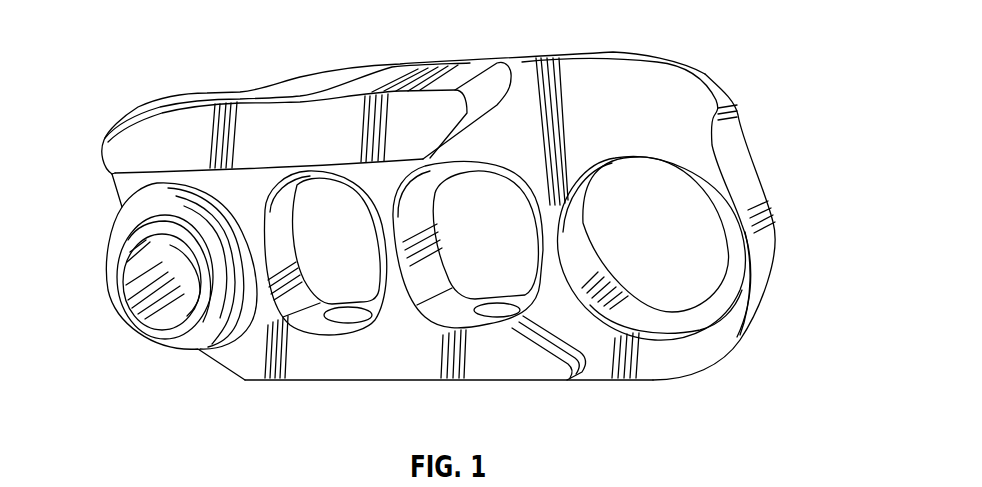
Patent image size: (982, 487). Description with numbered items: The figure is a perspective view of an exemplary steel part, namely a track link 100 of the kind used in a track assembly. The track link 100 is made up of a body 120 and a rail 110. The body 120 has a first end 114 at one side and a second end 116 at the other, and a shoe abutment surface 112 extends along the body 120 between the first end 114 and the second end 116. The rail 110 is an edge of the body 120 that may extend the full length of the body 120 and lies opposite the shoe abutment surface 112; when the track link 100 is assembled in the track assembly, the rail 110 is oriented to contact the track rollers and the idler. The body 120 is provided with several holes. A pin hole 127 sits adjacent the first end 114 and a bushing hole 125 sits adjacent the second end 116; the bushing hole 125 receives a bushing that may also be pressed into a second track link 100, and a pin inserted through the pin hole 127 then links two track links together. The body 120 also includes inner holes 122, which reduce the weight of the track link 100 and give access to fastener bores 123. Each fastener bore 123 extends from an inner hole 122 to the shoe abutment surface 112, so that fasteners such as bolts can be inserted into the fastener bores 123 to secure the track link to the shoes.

The track link 100 is at (738, 31).
The rail 110 is at (527, 60).
The shoe abutment surface 112 is at (590, 380).
The first end 114 is at (115, 185).
The second end 116 is at (770, 248).
The body 120 is at (727, 207).
The inner hole 122 is at (307, 335).
The fastener bore 123 is at (347, 325).
The bushing hole 125 is at (703, 323).
The pin hole 127 is at (150, 310).